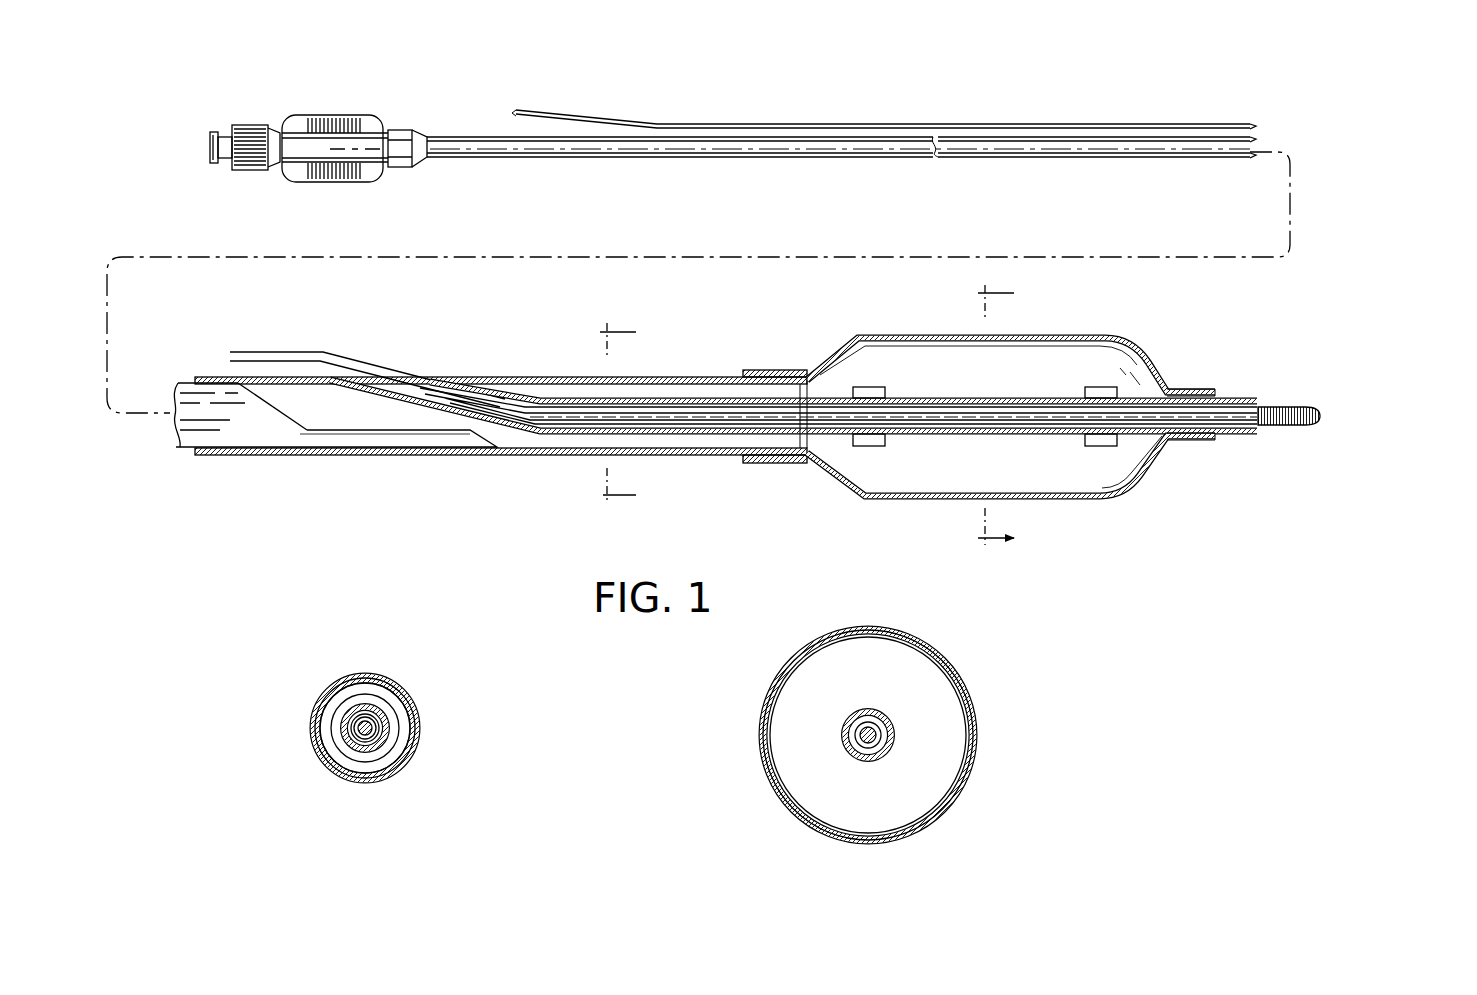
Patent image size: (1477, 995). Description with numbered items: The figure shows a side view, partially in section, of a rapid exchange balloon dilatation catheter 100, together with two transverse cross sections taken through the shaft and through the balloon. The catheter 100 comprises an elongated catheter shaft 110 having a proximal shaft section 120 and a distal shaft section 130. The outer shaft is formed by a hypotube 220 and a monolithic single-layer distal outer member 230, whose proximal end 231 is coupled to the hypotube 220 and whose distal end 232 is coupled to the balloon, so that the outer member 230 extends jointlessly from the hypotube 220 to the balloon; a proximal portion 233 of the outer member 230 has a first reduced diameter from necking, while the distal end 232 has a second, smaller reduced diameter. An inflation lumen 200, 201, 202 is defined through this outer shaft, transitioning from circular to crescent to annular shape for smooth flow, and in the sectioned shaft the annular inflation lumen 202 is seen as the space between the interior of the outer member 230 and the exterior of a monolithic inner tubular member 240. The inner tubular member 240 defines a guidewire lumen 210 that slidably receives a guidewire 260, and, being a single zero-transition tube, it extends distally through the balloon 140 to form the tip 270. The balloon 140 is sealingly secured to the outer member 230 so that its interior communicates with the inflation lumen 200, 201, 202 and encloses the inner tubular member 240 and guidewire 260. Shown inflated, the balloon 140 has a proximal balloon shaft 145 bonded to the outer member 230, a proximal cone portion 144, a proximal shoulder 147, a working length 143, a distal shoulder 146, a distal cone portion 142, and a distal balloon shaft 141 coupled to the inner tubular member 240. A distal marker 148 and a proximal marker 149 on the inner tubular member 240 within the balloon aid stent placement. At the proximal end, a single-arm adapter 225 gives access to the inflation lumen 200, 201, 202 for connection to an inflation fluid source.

In FIG. 1, the rapid exchange balloon dilatation catheter 100 is at (757, 106).
In FIG. 1, the elongated catheter shaft 110 is at (887, 163).
In FIG. 1, the proximal shaft section 120 is at (498, 175).
In FIG. 1, the distal shaft section 130 is at (1402, 373).
In FIG. 1, the balloon 140 is at (1143, 332).
In FIG. 9, the balloon 140 is at (765, 727).
In FIG. 1, the distal balloon shaft 141 is at (1200, 442).
In FIG. 1, the distal cone portion 142 is at (1150, 472).
In FIG. 1, the working length 143 is at (897, 500).
In FIG. 1, the proximal cone portion 144 is at (820, 478).
In FIG. 1, the proximal balloon shaft 145 is at (760, 466).
In FIG. 1, the distal shoulder 146 is at (1115, 335).
In FIG. 1, the proximal shoulder 147 is at (858, 333).
In FIG. 1, the distal marker 148 is at (1088, 387).
In FIG. 1, the proximal marker 149 is at (880, 386).
In FIG. 1, the inflation lumen 200 is at (170, 430).
In FIG. 1, the inflation lumen 201 is at (375, 410).
In FIG. 1, the inflation lumen 202 is at (705, 445).
In FIG. 8, the inflation lumen 202 is at (382, 700).
In FIG. 1, the guidewire lumen 210 is at (420, 356).
In FIG. 8, the guidewire lumen 210 is at (386, 722).
In FIG. 1, the hypotube 220 is at (180, 457).
In FIG. 1, the adapter 225 is at (394, 112).
In FIG. 1, the monolithic single-layer distal outer member 230 is at (577, 376).
In FIG. 8, the monolithic single-layer distal outer member 230 is at (318, 708).
In FIG. 1, the proximal end 231 is at (196, 376).
In FIG. 1, the distal end 232 is at (781, 376).
In FIG. 1, the proximal portion 233 is at (298, 457).
In FIG. 1, the monolithic inner tubular member 240 is at (722, 376).
In FIG. 8, the monolithic inner tubular member 240 is at (352, 745).
In FIG. 9, the monolithic inner tubular member 240 is at (893, 725).
In FIG. 1, the guidewire 260 is at (598, 112).
In FIG. 8, the guidewire 260 is at (378, 740).
In FIG. 9, the guidewire 260 is at (880, 743).
In FIG. 1, the tip 270 is at (1262, 407).